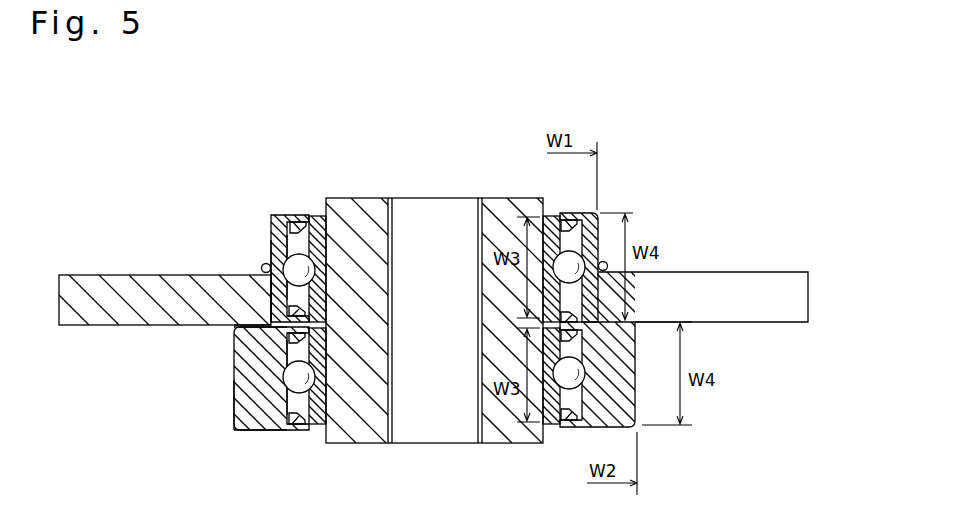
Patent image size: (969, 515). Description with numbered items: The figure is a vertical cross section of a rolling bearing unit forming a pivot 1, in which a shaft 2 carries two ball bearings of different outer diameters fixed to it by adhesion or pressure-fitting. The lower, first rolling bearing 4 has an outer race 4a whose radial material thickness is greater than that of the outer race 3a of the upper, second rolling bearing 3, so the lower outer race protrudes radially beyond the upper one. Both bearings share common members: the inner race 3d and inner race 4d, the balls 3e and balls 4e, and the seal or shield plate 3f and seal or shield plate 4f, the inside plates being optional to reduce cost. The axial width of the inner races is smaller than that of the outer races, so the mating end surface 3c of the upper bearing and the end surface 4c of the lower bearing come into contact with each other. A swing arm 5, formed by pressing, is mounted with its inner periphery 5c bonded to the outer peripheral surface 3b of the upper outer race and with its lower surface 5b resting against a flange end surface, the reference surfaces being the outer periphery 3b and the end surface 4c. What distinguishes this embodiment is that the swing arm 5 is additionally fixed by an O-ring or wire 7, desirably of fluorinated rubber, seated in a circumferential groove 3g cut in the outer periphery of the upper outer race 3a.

The pivot 1 is at (364, 196).
The shaft 2 is at (342, 204).
The second rolling bearing 3 is at (418, 309).
The outer race 3a is at (271, 256).
The outer peripheral surface 3b is at (268, 296).
The mating end surface 3c is at (247, 406).
The inner race 3d is at (333, 240).
The balls 3e is at (273, 247).
The seal or shield plate 3f is at (301, 219).
The circumferential groove 3g is at (300, 262).
The first rolling bearing 4 is at (432, 406).
The outer race 4a is at (243, 430).
The end surface 4c is at (242, 330).
The inner race 4d is at (330, 402).
The balls 4e is at (296, 389).
The seal or shield plate 4f is at (303, 427).
The swing arm 5 is at (408, 371).
The lower surface 5b is at (250, 332).
The inner periphery 5c is at (270, 302).
The O-ring or wire 7 is at (261, 268).